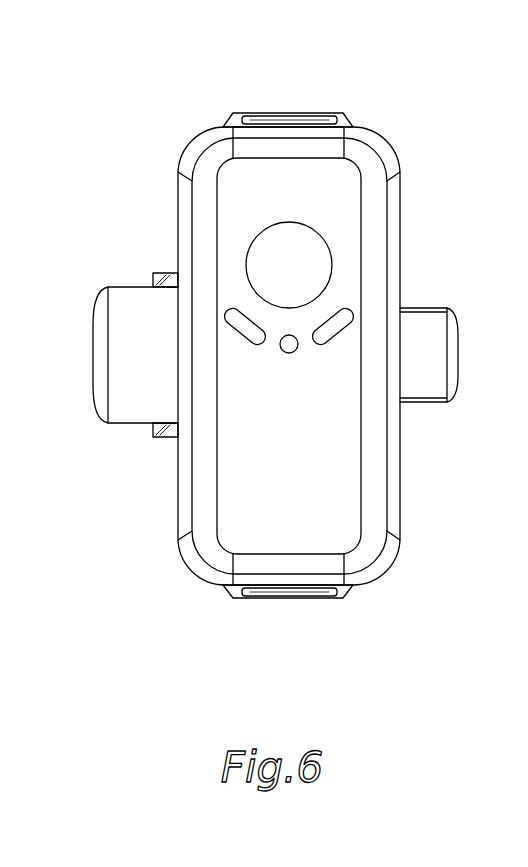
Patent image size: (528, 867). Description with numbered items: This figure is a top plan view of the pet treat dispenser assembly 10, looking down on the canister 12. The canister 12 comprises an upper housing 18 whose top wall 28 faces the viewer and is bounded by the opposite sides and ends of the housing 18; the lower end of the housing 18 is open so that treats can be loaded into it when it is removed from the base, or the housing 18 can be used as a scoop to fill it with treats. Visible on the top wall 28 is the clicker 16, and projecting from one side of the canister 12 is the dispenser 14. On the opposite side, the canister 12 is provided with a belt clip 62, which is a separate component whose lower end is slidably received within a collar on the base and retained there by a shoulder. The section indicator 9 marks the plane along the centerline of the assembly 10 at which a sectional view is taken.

The section line 9- 9 is at (165, 663).
The remote control device 10 is at (388, 91).
The housing 12 is at (393, 262).
The side button 14 is at (442, 342).
The circular aperture / lens 16 is at (292, 240).
The housing shell portion 18 is at (182, 203).
The front face panel 28 is at (280, 446).
The actuator button 62 is at (98, 345).